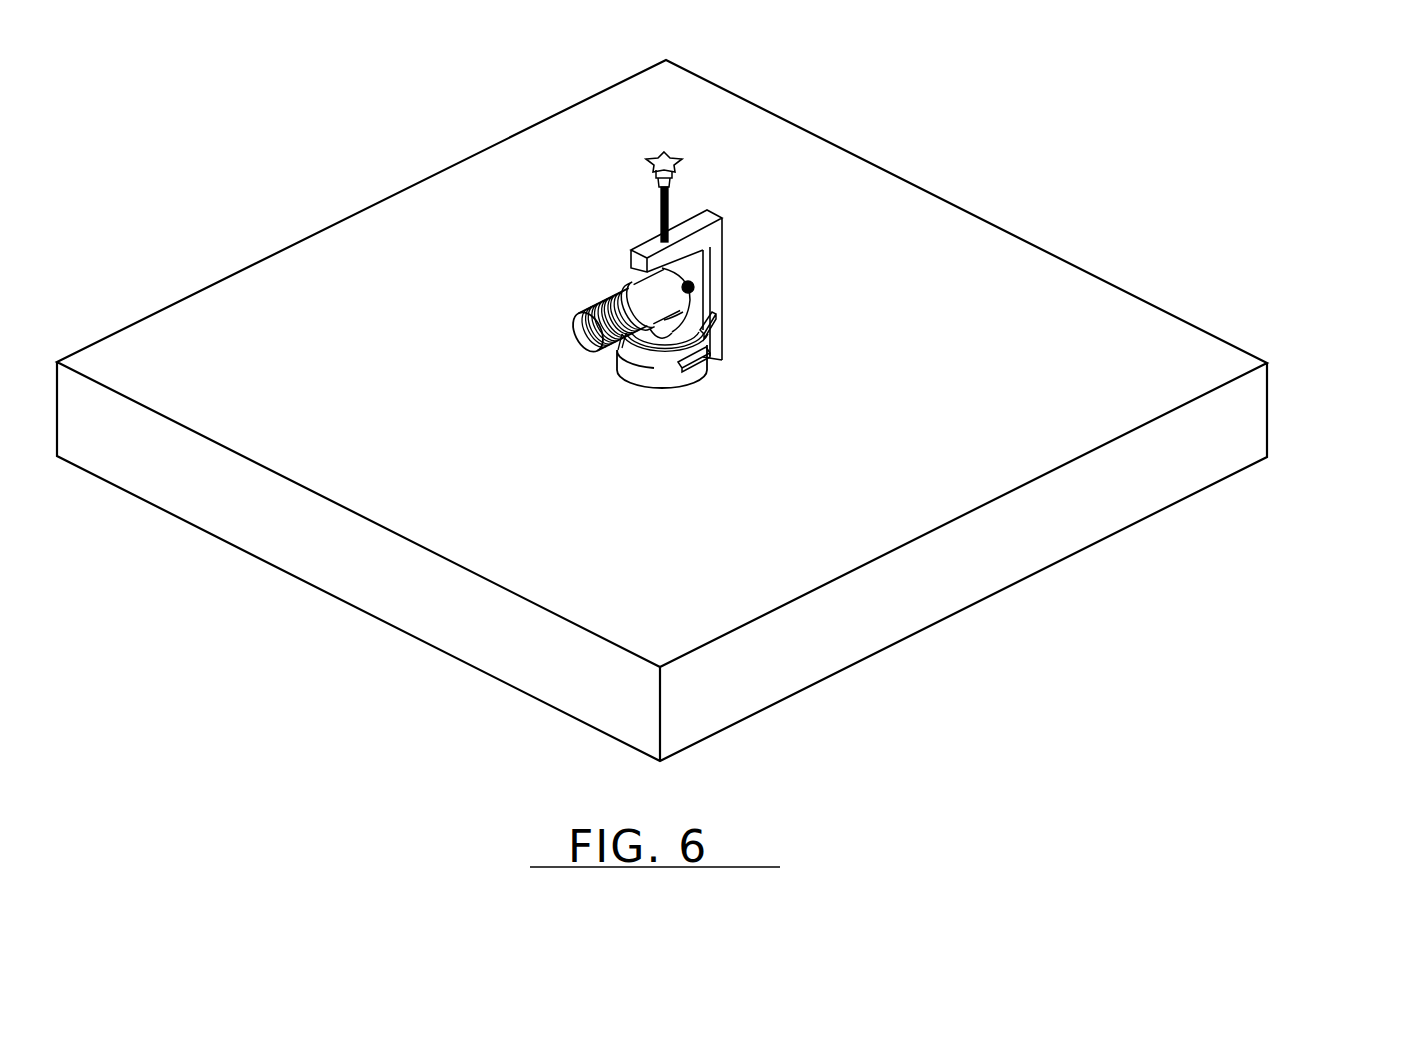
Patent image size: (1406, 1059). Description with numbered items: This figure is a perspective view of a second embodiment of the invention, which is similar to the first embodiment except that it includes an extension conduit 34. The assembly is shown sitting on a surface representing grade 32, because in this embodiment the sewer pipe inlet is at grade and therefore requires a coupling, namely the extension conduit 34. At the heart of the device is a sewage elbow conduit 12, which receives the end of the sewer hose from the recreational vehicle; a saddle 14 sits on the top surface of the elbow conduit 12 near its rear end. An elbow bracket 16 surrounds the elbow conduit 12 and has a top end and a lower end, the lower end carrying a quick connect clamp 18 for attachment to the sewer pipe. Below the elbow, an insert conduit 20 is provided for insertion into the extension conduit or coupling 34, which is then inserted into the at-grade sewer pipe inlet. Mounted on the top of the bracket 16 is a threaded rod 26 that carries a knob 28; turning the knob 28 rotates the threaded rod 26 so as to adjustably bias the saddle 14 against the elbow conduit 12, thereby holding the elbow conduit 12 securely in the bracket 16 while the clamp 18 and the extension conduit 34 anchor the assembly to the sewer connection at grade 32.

The sewage elbow conduit 12 is at (572, 328).
The saddle 14 is at (642, 278).
The elbow bracket 16 is at (725, 236).
The quick connect clamp 18 is at (698, 354).
The insert conduit 20 is at (710, 320).
The threaded rod 26 is at (658, 206).
The knob 28 is at (648, 154).
The grade 32 is at (1272, 363).
The extension conduit 34 is at (617, 360).